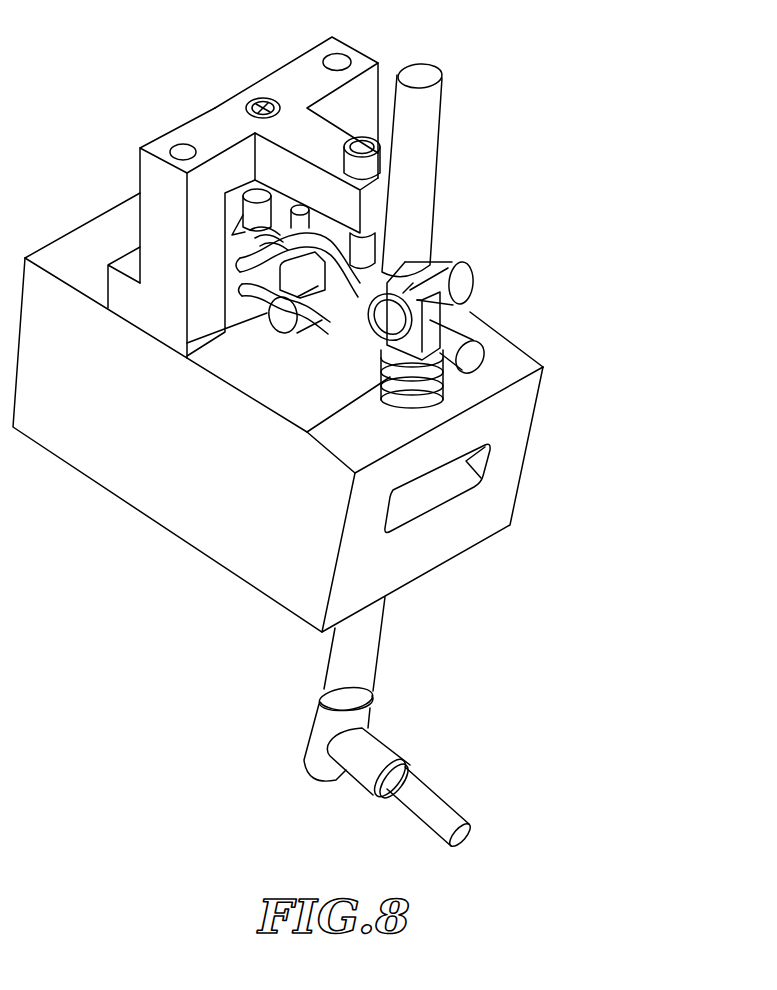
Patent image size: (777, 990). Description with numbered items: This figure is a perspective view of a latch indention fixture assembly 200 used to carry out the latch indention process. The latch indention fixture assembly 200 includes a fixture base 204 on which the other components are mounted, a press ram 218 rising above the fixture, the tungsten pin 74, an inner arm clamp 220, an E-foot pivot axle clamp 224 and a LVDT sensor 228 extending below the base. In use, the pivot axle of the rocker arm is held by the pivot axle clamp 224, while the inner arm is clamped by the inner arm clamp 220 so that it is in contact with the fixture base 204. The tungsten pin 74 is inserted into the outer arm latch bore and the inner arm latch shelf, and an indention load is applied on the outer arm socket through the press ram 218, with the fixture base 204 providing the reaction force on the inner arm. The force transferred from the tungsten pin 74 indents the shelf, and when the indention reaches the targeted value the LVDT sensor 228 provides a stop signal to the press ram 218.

The latch indention fixture assembly 200 is at (326, 439).
The fixture base 204 is at (228, 517).
The E-foot pivot axle clamp 224 is at (253, 187).
The press ram 218 is at (418, 172).
The inner arm clamp 220 is at (365, 248).
The tungsten pin 74 is at (457, 341).
The LVDT sensor 228 is at (366, 649).